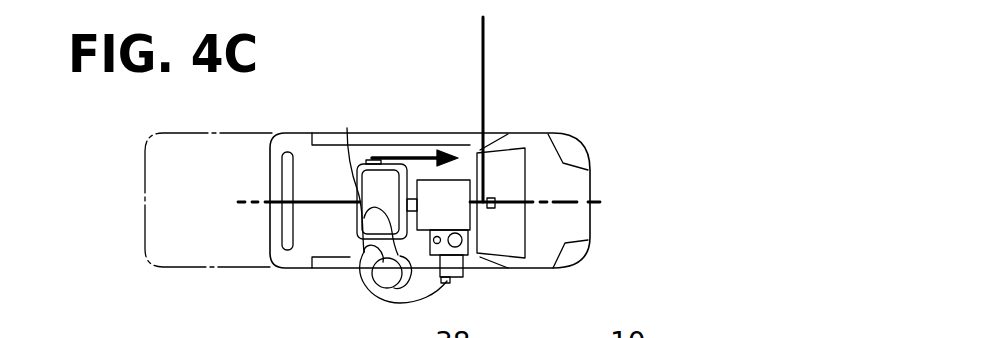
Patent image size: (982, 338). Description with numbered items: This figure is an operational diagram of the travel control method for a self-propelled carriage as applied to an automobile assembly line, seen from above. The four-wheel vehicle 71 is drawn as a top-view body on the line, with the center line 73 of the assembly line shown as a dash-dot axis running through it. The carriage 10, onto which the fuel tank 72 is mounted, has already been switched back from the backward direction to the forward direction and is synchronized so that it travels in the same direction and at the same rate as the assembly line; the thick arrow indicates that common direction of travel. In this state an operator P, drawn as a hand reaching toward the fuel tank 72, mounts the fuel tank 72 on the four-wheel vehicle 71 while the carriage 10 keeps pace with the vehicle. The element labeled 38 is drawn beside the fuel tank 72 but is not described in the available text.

The carriage 10 is at (465, 163).
The connector unit 38 is at (371, 162).
The four-wheel vehicle 71 is at (267, 230).
The fuel tank 72 is at (347, 130).
The center line 73 is at (600, 202).
The operator P is at (387, 302).